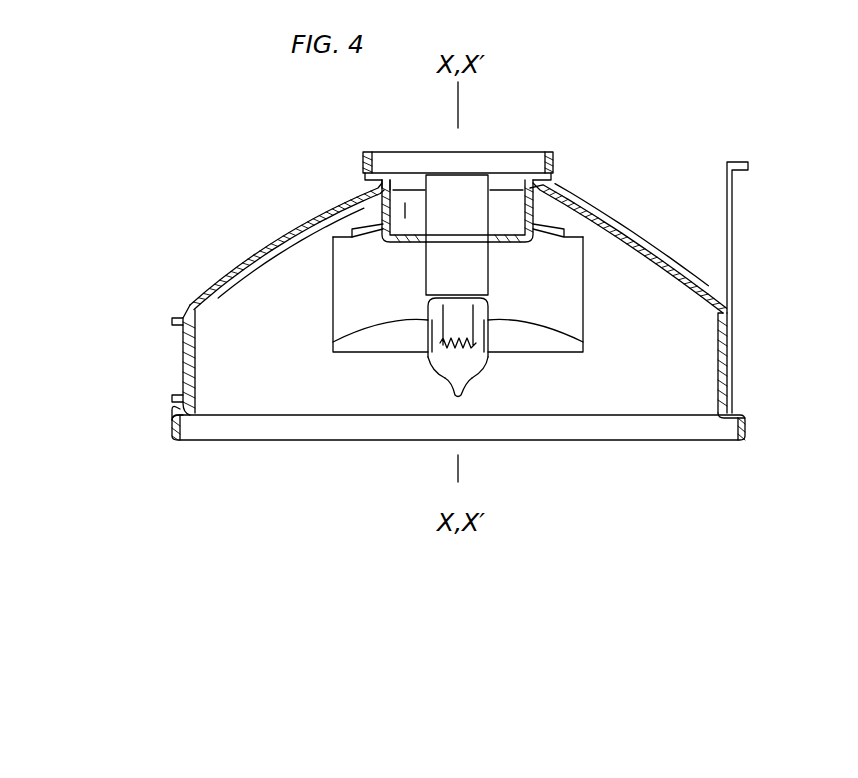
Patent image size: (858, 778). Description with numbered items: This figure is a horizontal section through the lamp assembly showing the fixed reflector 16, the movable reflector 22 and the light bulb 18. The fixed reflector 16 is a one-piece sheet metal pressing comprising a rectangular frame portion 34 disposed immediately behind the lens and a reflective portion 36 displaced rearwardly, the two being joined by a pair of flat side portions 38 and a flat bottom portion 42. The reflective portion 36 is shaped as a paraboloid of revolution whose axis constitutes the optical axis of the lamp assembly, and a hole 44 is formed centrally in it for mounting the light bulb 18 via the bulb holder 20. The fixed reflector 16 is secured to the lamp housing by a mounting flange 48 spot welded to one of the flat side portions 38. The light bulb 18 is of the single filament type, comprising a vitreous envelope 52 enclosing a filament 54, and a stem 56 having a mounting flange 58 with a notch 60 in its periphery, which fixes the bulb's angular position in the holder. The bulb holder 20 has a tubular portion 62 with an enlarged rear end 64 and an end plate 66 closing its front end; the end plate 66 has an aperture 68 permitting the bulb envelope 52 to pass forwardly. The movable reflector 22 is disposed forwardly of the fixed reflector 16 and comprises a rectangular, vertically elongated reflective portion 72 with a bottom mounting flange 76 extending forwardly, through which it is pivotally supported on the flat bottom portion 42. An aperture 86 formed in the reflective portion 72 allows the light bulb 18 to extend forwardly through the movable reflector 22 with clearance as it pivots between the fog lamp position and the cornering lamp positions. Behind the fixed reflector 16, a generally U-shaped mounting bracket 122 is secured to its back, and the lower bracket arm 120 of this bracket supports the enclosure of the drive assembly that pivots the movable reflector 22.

The fixed reflector 16 is at (324, 211).
The light bulb 18 is at (480, 370).
The bulb holder 20 is at (497, 152).
The movable reflector 22 is at (333, 311).
The rectangular frame portion 34 is at (172, 425).
The reflective portion 36 is at (250, 256).
The flat side portions 38 is at (196, 368).
The flat bottom portion 42 is at (284, 405).
The hole 44 is at (385, 151).
The mounting flange 48 is at (182, 342).
The envelope 52 is at (488, 345).
The filament 54 is at (455, 347).
The stem 56 is at (488, 284).
The mounting flange 58 is at (480, 243).
The notch 60 is at (455, 232).
The tubular portion 62 is at (532, 213).
The enlarged rear end 64 is at (553, 161).
The end plate 66 is at (398, 243).
The aperture 68 is at (430, 247).
The reflective portion 72 is at (570, 272).
The bottom mounting flange 76 is at (365, 350).
The aperture 86 is at (350, 238).
The lower bracket arm 120 is at (733, 247).
The mounting bracket 122 is at (733, 370).